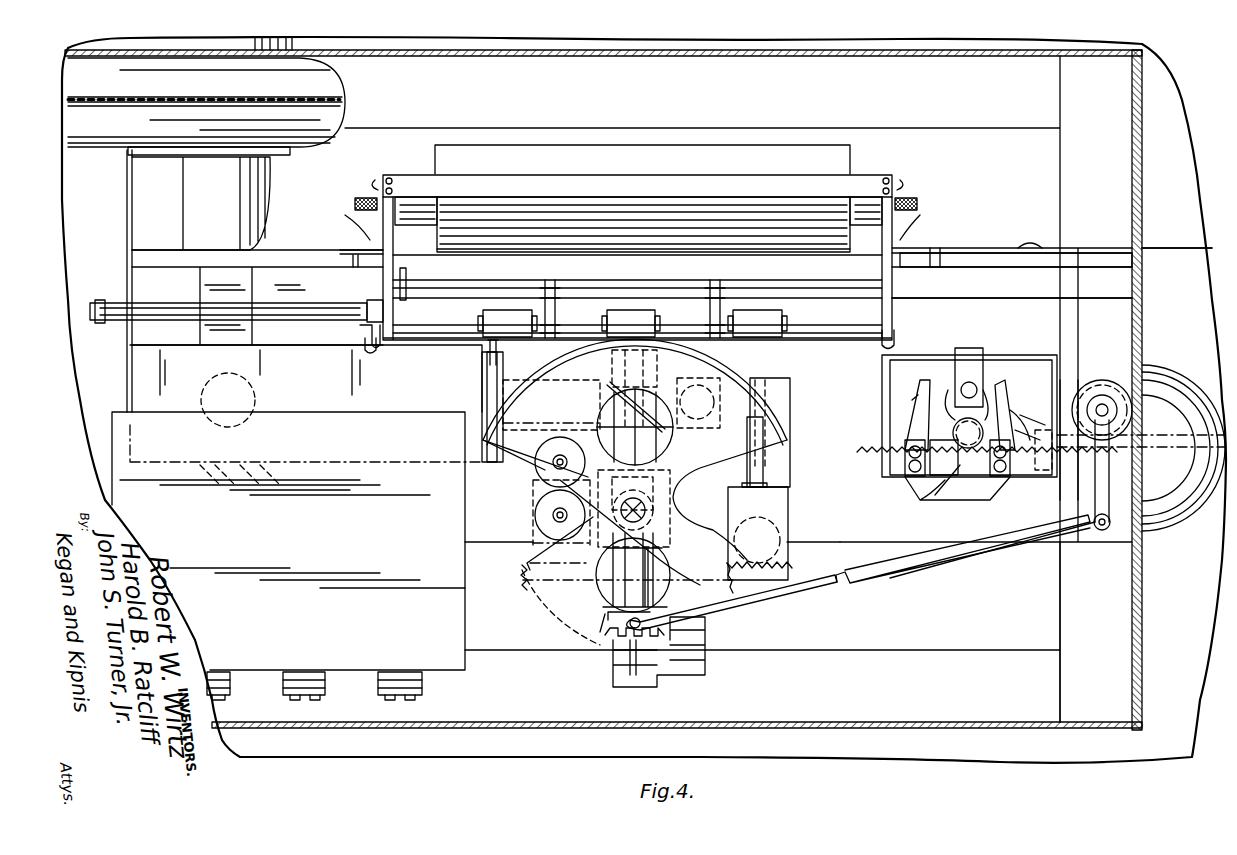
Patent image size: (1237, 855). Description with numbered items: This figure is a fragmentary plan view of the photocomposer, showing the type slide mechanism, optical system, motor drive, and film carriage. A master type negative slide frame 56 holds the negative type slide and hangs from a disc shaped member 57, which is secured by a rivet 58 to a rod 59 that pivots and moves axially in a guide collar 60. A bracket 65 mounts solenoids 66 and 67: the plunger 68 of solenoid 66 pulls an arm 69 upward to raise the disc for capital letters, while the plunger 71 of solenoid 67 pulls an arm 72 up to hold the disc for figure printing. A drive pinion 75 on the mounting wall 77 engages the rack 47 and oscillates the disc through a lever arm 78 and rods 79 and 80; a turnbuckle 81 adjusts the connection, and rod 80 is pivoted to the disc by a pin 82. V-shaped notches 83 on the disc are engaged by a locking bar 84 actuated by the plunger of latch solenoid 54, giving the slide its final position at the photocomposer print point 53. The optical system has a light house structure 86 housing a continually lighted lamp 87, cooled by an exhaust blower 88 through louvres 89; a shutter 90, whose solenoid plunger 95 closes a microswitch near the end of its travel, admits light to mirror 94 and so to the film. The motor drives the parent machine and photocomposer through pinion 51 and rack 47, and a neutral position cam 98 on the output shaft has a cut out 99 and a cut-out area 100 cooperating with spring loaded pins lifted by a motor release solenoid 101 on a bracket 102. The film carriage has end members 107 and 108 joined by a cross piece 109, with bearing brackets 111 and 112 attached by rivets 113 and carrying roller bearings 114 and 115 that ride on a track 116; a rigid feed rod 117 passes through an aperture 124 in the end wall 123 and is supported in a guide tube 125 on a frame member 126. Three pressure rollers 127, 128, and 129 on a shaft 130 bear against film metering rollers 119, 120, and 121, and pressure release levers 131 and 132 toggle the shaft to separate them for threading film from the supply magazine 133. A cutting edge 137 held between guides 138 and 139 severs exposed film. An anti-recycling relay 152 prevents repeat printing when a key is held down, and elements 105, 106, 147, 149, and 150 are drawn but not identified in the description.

The rack 47 is at (1210, 435).
The pinion 51 is at (915, 490).
The photocomposer print point 53 is at (628, 340).
The latch solenoid 54 is at (655, 568).
The master type negative slide frame 56 is at (790, 435).
The disc shaped member 57 is at (550, 414).
The rivet 58 is at (638, 522).
The rod 59 is at (678, 510).
The guide collar 60 is at (655, 475).
The bracket 65 is at (575, 632).
The solenoid 66 is at (535, 537).
The solenoid 67 is at (514, 446).
The plunger 68 is at (553, 516).
The arm 69 is at (535, 500).
The plunger 71 is at (565, 455).
The arm 72 is at (535, 480).
The drive pinion 75 is at (1132, 405).
The mounting wall 77 is at (1070, 372).
The lever arm 78 is at (1110, 485).
The rod 79 is at (975, 552).
The rod 80 is at (790, 585).
The turnbuckle 81 is at (865, 582).
The pin 82 is at (605, 640).
The V-shaped notches 83 is at (605, 625).
The locking bar 84 is at (630, 665).
The light house structure 86 is at (395, 398).
The lamp 87 is at (240, 385).
The exhaust blower 88 is at (268, 86).
The louvres 89 is at (268, 462).
The shutter 90 is at (482, 378).
The mirror 94 is at (650, 400).
The plunger 95 is at (500, 355).
The neutral position cam 98 is at (972, 485).
The cut out 99 is at (945, 480).
The cut-out area 100 is at (990, 490).
The motor release solenoid 101 is at (980, 385).
The bracket 102 is at (972, 360).
The arm 105 is at (928, 390).
The arm 106 is at (1025, 378).
The end member 107 is at (365, 255).
The end member 108 is at (880, 270).
The cross piece 109 is at (868, 183).
The bearing bracket 111 is at (355, 267).
The bearing bracket 112 is at (925, 255).
The rivets 113 is at (355, 232).
The roller bearing 114 is at (318, 272).
The roller bearing 115 is at (930, 267).
The track 116 is at (1045, 258).
The rigid feed rod 117 is at (1110, 298).
The film metering roller 119 is at (842, 316).
The film metering roller 120 is at (598, 318).
The film metering roller 121 is at (462, 318).
The end wall 123 is at (1062, 615).
The aperture 124 is at (1142, 330).
The guide tube 125 is at (103, 300).
The frame member 126 is at (127, 198).
The pressure roller 127 is at (755, 310).
The pressure roller 128 is at (625, 355).
The pressure roller 129 is at (507, 323).
The shaft 130 is at (410, 340).
The pressure release lever 131 is at (898, 336).
The pressure release lever 132 is at (365, 340).
The supply magazine 133 is at (735, 150).
The cutting edge 137 is at (408, 276).
The guide 138 is at (525, 285).
The guide 139 is at (590, 278).
The foot 147 is at (236, 672).
The block 149 is at (782, 525).
The foot 150 is at (307, 672).
The anti-recycling relay 152 is at (400, 672).